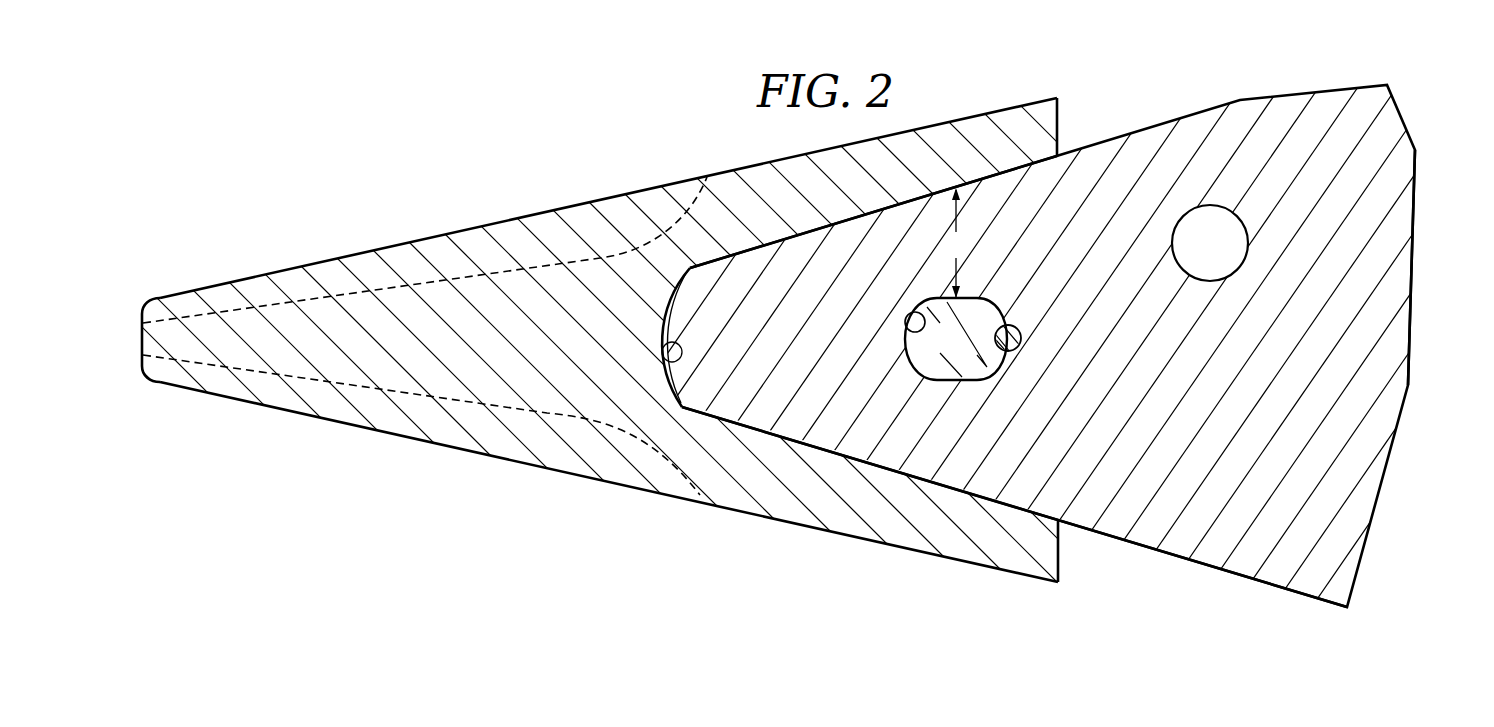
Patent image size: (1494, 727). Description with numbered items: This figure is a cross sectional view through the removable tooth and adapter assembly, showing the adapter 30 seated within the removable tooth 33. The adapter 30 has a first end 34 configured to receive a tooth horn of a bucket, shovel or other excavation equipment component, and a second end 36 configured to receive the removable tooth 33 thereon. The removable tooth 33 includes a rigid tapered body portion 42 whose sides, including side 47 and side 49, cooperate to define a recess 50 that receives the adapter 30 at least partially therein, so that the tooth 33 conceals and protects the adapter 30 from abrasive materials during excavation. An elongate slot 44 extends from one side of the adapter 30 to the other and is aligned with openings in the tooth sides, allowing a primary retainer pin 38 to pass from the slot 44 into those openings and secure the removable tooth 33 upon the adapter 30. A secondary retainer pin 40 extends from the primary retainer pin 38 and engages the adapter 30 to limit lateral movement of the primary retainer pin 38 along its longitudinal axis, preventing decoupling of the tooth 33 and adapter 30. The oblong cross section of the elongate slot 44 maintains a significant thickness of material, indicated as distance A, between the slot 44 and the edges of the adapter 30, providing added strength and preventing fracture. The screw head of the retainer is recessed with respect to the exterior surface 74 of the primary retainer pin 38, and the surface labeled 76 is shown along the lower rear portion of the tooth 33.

The adapter 30 is at (1435, 185).
The removable tooth 33 is at (352, 230).
The first end 34 is at (1295, 105).
The second end 36 is at (733, 352).
The primary retainer pin 38 is at (944, 352).
The secondary retainer pin 40 is at (1021, 338).
The tapered body portion 42 is at (505, 352).
The elongate slot 44 is at (905, 325).
The side 47 is at (575, 205).
The side 49 is at (510, 458).
The recess 50 is at (662, 357).
The exterior surface 74 is at (1172, 556).
The bottom rear surface of tooth 76 is at (975, 563).